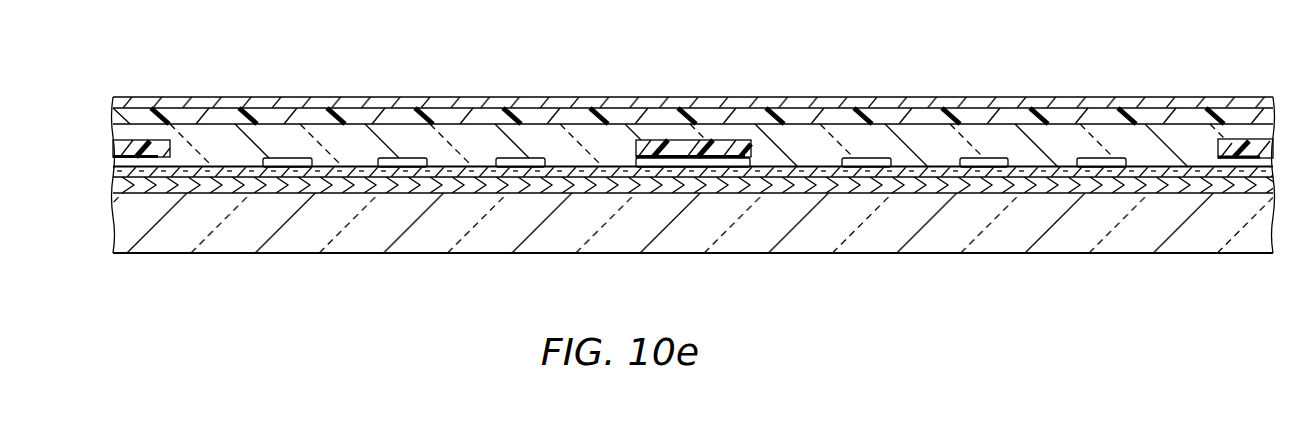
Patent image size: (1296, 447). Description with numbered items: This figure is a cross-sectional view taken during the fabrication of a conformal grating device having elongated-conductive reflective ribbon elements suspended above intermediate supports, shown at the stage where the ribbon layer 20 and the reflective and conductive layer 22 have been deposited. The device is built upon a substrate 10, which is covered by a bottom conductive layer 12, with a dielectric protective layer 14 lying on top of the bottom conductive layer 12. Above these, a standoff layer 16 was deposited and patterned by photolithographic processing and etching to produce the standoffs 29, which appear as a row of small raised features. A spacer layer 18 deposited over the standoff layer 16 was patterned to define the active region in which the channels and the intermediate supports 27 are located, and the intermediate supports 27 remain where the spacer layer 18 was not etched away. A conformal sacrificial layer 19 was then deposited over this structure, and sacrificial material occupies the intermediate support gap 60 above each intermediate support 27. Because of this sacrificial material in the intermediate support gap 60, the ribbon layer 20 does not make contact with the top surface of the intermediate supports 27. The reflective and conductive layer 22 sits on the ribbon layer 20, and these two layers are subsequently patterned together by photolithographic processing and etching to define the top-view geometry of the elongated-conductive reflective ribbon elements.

The substrate 10 is at (123, 235).
The bottom conductive layer 12 is at (113, 188).
The dielectric protective layer 14 is at (115, 173).
The standoff layer 16 is at (113, 164).
The spacer layer 18 is at (113, 147).
The conformal sacrificial layer 19 is at (183, 143).
The ribbon layer 20 is at (177, 120).
The reflective and conductive layer 22 is at (258, 97).
The intermediate supports 27 is at (165, 158).
The standoffs 29 is at (387, 167).
The intermediate support gap 60 is at (672, 135).